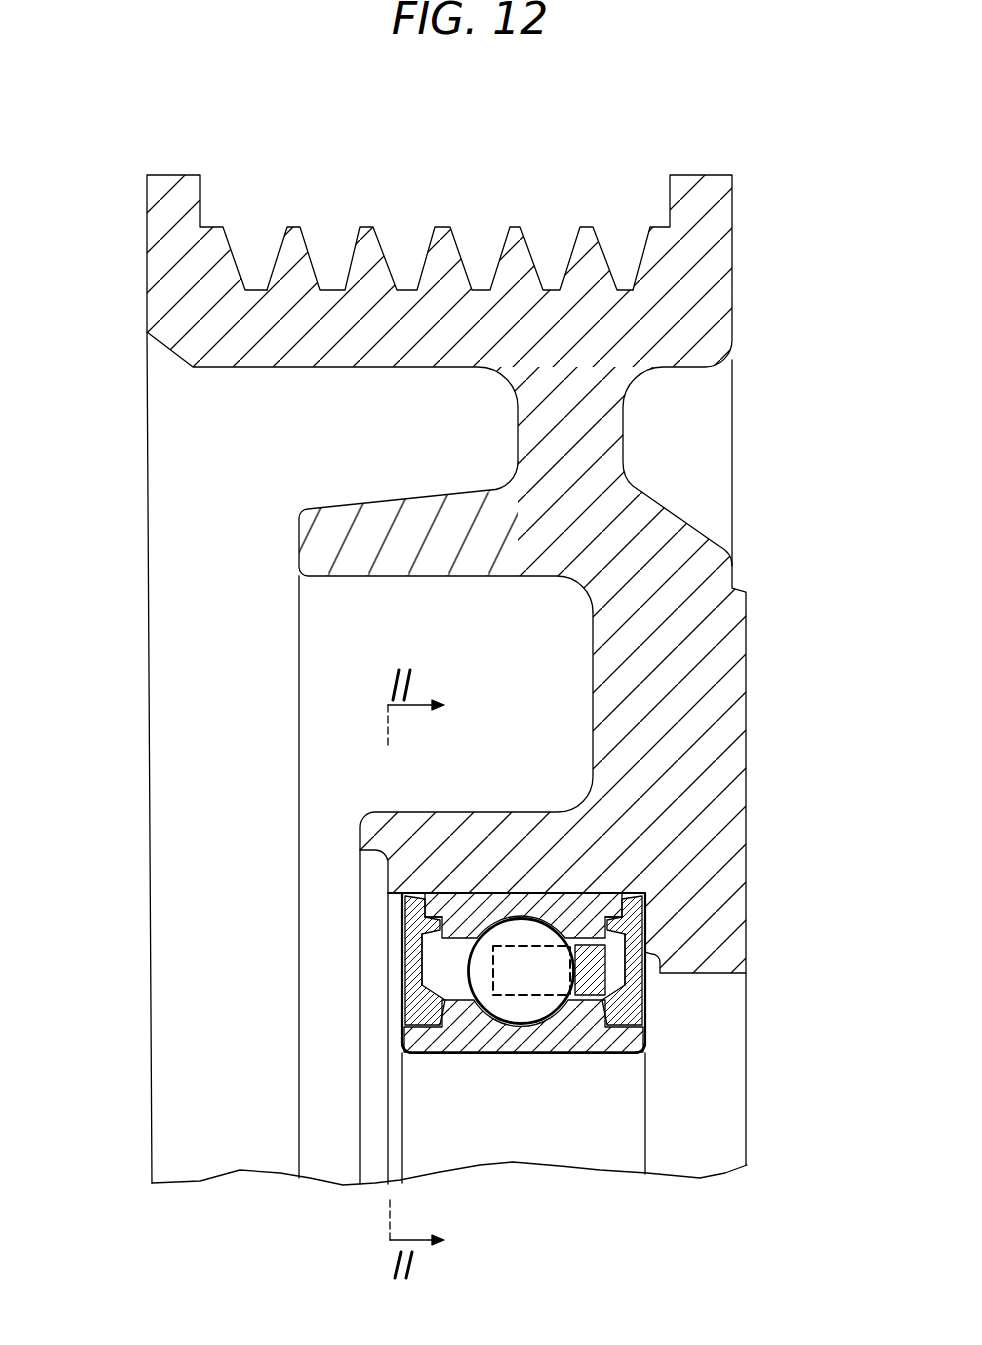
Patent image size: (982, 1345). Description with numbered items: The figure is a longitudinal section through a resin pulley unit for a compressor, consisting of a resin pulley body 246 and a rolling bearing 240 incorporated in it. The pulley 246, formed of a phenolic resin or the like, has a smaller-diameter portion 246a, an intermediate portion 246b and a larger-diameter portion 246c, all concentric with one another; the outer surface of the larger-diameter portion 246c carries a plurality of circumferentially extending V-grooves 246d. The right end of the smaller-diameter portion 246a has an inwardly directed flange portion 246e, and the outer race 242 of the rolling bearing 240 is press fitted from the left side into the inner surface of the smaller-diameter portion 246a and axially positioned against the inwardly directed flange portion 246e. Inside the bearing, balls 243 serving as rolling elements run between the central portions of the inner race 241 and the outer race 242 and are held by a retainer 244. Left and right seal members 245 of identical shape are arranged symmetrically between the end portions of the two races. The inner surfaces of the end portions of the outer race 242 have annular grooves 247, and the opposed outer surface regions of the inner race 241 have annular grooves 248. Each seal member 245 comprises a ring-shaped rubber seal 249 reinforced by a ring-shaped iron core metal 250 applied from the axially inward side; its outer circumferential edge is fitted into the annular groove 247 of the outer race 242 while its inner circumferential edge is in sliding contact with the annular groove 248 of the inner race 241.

The rolling bearing 240 is at (525, 878).
The inner race 241 is at (413, 1032).
The outer race 242 is at (400, 910).
The balls 243 is at (517, 1010).
The retainer 244 is at (541, 997).
The seal members 245 is at (398, 990).
The resin pulley body 246 is at (723, 551).
The smaller-diameter portion 246a is at (380, 830).
The intermediate portion 246b is at (297, 538).
The larger-diameter portion 246c is at (155, 297).
The V-grooves 246d is at (365, 240).
The inwardly directed flange portion 246e is at (737, 933).
The annular grooves 247 is at (407, 893).
The annular grooves 248 is at (437, 1052).
The rubber seal 249 is at (403, 938).
The core metal 250 is at (396, 985).